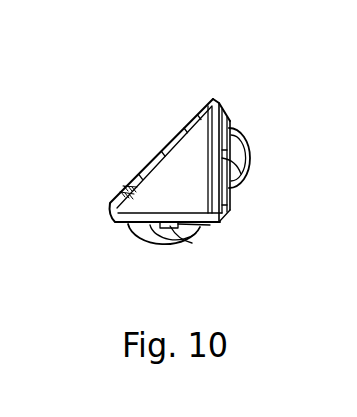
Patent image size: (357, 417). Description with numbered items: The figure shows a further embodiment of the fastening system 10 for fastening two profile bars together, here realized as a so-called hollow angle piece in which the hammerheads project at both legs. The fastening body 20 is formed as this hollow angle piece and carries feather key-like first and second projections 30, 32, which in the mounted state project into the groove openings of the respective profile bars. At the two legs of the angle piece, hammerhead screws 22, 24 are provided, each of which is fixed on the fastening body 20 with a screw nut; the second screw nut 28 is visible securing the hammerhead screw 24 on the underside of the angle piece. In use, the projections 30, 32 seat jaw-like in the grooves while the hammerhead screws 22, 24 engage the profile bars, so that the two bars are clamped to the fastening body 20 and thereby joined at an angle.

The fastening system 10 is at (188, 142).
The fastening body 20 is at (185, 178).
The hammerhead screw 22 is at (240, 149).
The hammerhead screw 24 is at (152, 235).
The second screw nut 28 is at (125, 192).
The first projection 30 is at (228, 197).
The second projection 32 is at (205, 226).